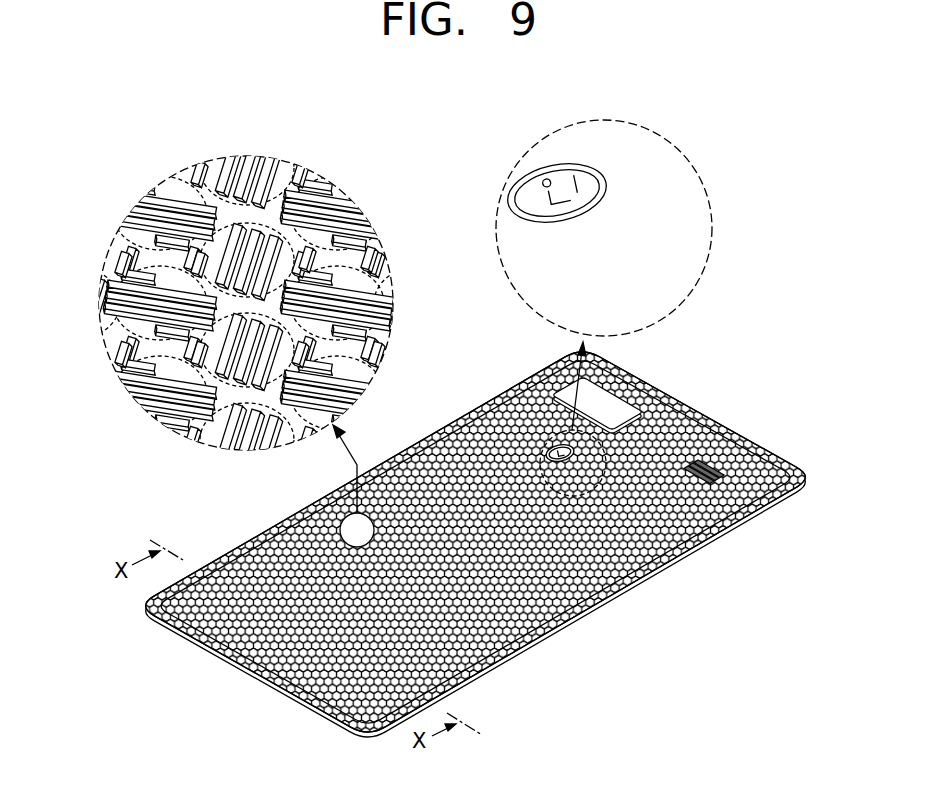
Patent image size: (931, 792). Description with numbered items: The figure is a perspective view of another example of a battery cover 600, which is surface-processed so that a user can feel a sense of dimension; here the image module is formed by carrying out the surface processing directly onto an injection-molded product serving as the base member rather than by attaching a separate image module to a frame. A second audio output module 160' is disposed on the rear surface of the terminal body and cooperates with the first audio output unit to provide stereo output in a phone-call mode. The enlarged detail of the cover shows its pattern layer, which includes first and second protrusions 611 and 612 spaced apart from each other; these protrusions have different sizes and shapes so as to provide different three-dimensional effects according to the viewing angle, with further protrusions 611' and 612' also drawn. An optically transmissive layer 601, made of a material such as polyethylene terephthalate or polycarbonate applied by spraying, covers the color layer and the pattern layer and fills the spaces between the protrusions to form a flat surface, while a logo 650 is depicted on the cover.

The battery cover 600 is at (135, 196).
The optically transmissive layer 601 is at (340, 263).
The first protrusion 611 is at (370, 305).
The second pattern bars 611' is at (429, 305).
The second protrusion 612 is at (362, 216).
The second pattern blocks 612' is at (389, 216).
The logo 650 is at (700, 257).
The second audio output module 160' is at (747, 434).